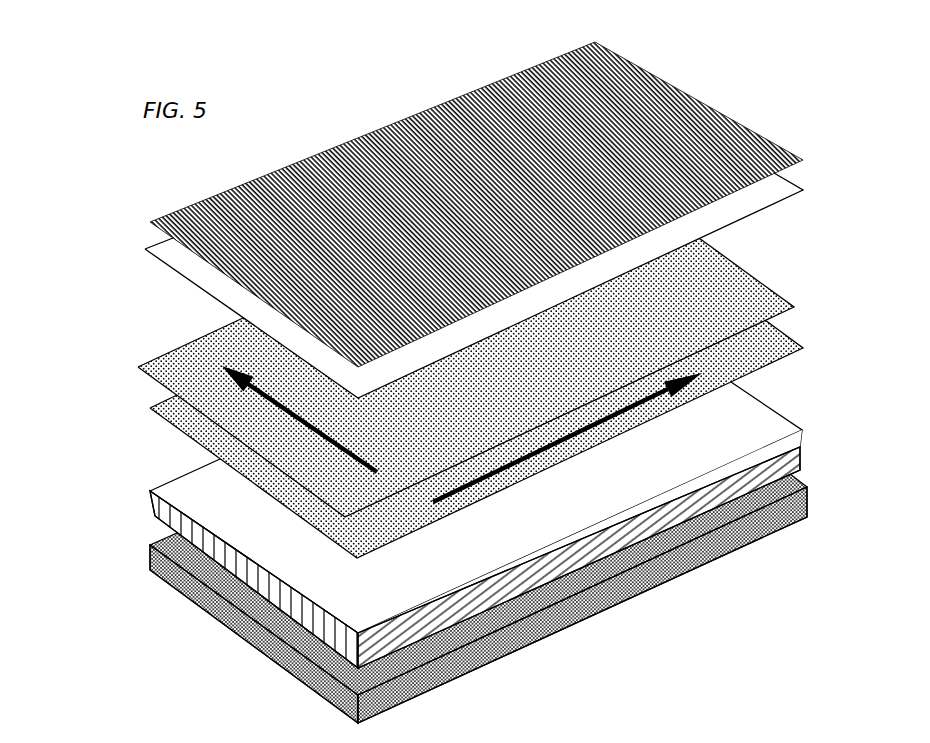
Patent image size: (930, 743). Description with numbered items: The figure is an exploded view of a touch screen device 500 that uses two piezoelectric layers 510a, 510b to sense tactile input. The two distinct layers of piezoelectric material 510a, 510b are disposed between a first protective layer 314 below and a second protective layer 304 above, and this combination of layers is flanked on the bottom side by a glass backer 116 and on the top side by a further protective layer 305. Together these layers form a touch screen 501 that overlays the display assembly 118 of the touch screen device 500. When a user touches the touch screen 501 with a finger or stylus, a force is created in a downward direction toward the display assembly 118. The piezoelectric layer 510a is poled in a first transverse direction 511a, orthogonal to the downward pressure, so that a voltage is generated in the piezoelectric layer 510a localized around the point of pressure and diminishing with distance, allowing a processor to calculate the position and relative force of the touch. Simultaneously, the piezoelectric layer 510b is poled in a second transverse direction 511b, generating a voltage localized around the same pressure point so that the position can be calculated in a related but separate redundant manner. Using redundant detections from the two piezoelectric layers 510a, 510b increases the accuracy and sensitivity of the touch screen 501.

The touch screen device 500 is at (461, 374).
The touch screen 501 is at (461, 354).
The polarizer layer 305 is at (160, 213).
The second protective layer 304 is at (145, 249).
The piezoelectric layer 510a is at (135, 362).
The piezoelectric layer 510b is at (145, 403).
The first transverse direction 511a is at (272, 402).
The second transverse direction 511b is at (583, 433).
The first protective layer 314 is at (154, 482).
The glass backer 116 is at (149, 511).
The display assembly 118 is at (145, 567).